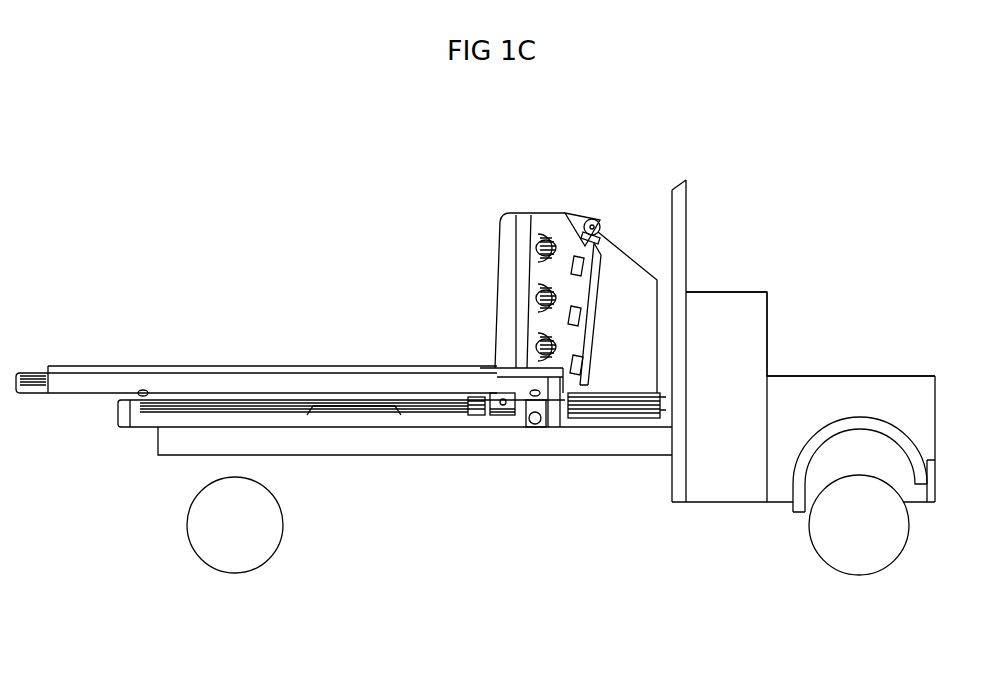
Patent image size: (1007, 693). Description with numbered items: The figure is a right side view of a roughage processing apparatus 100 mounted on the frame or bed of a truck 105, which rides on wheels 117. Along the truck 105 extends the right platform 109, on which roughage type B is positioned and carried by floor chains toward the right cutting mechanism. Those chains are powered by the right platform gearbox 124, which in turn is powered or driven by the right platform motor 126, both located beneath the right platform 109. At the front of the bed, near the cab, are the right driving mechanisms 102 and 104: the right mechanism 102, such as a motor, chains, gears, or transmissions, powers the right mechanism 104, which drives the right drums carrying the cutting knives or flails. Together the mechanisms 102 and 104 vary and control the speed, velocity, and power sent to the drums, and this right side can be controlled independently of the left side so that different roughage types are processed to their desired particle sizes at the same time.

The roughage processing apparatus 100 is at (790, 667).
The right driving mechanism 102 is at (592, 219).
The right driving mechanism 104 is at (541, 348).
The truck 105 is at (837, 375).
The right platform 109 is at (57, 395).
The wheels 117 is at (187, 535).
The right platform gearbox 124 is at (507, 412).
The right platform motor 126 is at (475, 412).